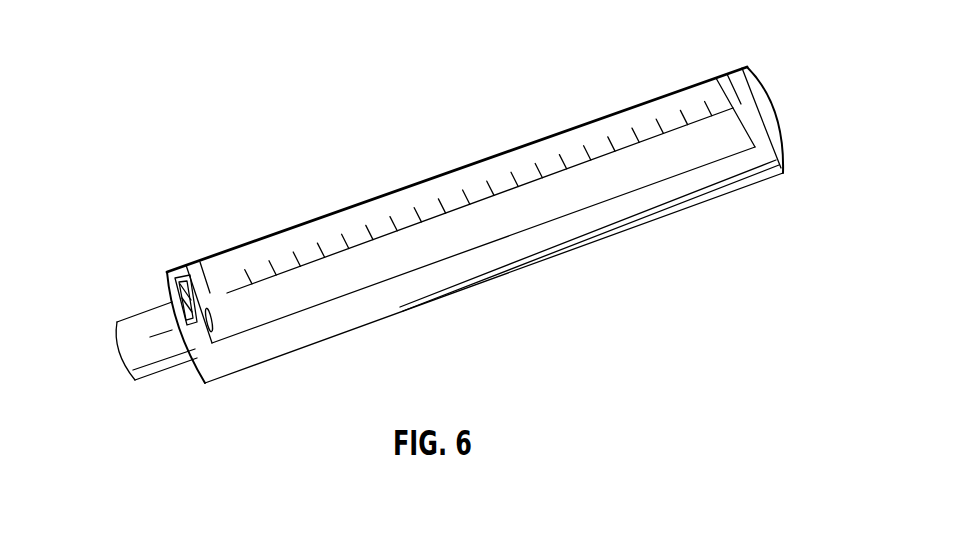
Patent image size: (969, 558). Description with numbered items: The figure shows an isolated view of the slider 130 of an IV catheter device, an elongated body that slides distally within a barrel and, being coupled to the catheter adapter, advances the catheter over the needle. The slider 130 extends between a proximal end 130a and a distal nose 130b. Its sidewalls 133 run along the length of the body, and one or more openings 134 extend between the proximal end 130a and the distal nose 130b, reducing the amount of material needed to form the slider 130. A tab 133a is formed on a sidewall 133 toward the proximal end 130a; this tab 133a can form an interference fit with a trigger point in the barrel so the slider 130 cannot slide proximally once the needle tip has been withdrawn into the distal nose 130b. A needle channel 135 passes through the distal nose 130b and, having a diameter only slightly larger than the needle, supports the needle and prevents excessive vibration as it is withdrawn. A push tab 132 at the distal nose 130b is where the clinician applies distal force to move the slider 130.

The slider 130 is at (125, 93).
The proximal end 130a is at (785, 53).
The distal nose 130b is at (134, 336).
The push tab 132 is at (180, 291).
The sidewalls 133 is at (488, 159).
The tab 133a is at (727, 83).
The openings 134 is at (462, 238).
The needle channel 135 is at (210, 308).